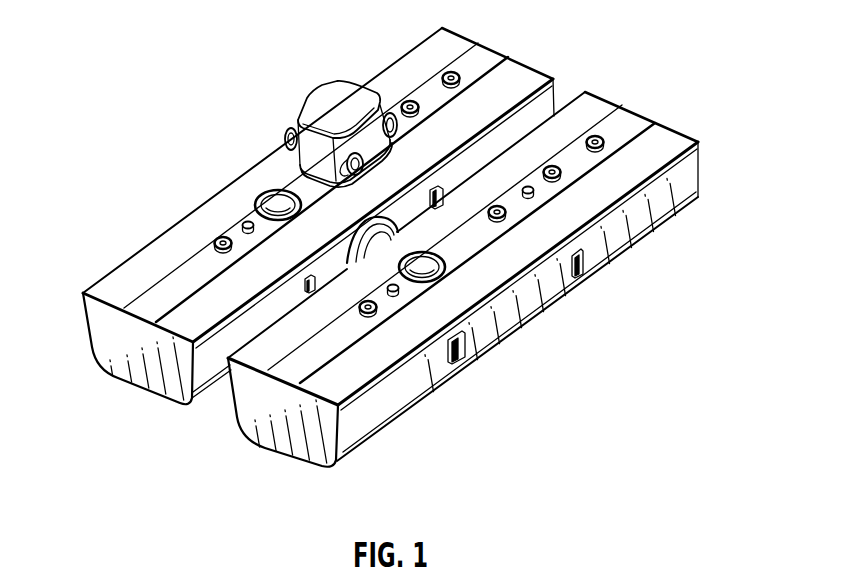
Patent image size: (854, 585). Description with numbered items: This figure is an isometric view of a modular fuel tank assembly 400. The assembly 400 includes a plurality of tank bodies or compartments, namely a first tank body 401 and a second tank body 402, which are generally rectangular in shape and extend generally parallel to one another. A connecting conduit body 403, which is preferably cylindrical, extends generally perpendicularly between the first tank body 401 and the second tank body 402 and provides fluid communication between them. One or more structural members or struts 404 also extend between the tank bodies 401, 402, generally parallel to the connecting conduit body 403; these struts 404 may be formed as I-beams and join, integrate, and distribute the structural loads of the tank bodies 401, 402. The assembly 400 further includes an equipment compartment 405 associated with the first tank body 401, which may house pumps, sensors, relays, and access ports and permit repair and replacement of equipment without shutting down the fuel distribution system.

The modular fuel tank assembly 400 is at (126, 40).
The first tank body 401 is at (124, 402).
The second tank body 402 is at (268, 457).
The connecting conduit body 403 is at (352, 222).
The structural member 404 is at (437, 187).
The equipment compartment 405 is at (330, 82).